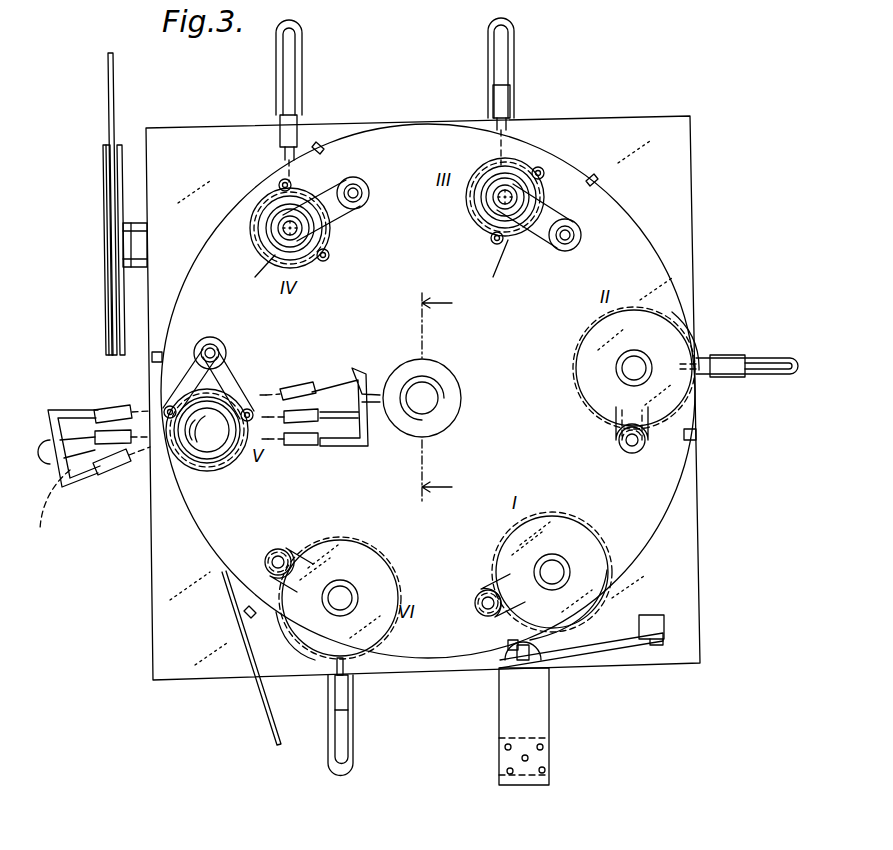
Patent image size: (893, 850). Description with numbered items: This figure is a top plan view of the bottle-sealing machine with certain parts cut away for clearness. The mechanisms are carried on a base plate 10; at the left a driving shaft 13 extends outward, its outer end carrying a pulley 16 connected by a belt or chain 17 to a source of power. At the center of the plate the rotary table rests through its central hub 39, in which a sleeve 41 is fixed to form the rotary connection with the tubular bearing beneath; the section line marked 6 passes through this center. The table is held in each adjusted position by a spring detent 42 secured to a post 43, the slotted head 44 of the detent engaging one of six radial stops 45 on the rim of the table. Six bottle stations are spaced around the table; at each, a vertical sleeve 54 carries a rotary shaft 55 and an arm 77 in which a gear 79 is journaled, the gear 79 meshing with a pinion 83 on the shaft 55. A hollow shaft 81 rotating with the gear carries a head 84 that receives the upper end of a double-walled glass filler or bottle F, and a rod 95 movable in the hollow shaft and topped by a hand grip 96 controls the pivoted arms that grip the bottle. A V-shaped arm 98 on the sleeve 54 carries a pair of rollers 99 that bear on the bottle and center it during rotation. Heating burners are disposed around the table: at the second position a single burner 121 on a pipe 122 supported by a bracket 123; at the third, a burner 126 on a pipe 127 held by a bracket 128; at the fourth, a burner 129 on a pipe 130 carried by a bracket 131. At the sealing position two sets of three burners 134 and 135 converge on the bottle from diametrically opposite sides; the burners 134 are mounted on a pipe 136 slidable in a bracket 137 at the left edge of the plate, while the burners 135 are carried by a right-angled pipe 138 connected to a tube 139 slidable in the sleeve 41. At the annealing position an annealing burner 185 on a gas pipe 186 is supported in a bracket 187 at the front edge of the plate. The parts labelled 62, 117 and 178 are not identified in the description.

The base plate 10 is at (618, 128).
The driving shaft 13 is at (147, 236).
The pulley 16 is at (103, 152).
The belt or chain 17 is at (113, 77).
The central hub 39 is at (461, 388).
The sleeve 41 is at (438, 398).
The tube 139 is at (445, 407).
The section line 6- 6 is at (445, 397).
The spring detent 42 is at (610, 651).
The post 43 is at (658, 620).
The slotted head 44 is at (527, 662).
The stops 45 is at (322, 144).
The vertical sleeve 54 is at (366, 208).
The rotary shaft 55 is at (363, 193).
The station V disc 62 is at (225, 460).
The filler F is at (215, 448).
The arm 77 is at (540, 240).
The gear 79 is at (582, 346).
The hollow shaft 81 is at (282, 224).
The pinion 83 is at (636, 455).
The head 84 is at (266, 241).
The rod 95 is at (283, 256).
The hand grip 96 is at (622, 367).
The V-shaped arm 98 is at (323, 178).
The rollers 99 is at (279, 181).
The rod 117 is at (272, 735).
The burner 121 is at (726, 355).
The pipe 122 is at (793, 356).
The bracket 123 is at (746, 376).
The burner 126 is at (494, 97).
The pipe 127 is at (489, 30).
The bracket 128 is at (515, 68).
The gas burner 129 is at (300, 133).
The pipe 130 is at (296, 30).
The bracket 131 is at (305, 46).
The burners 134 is at (106, 409).
The burners 135 is at (306, 452).
The pipe 136 is at (51, 510).
The bracket 137 is at (80, 476).
The right-angled pipe 138 is at (372, 442).
The mounting plate 178 is at (505, 733).
The annealing burner 185 is at (349, 700).
The gas pipe 186 is at (350, 772).
The bracket 187 is at (354, 736).